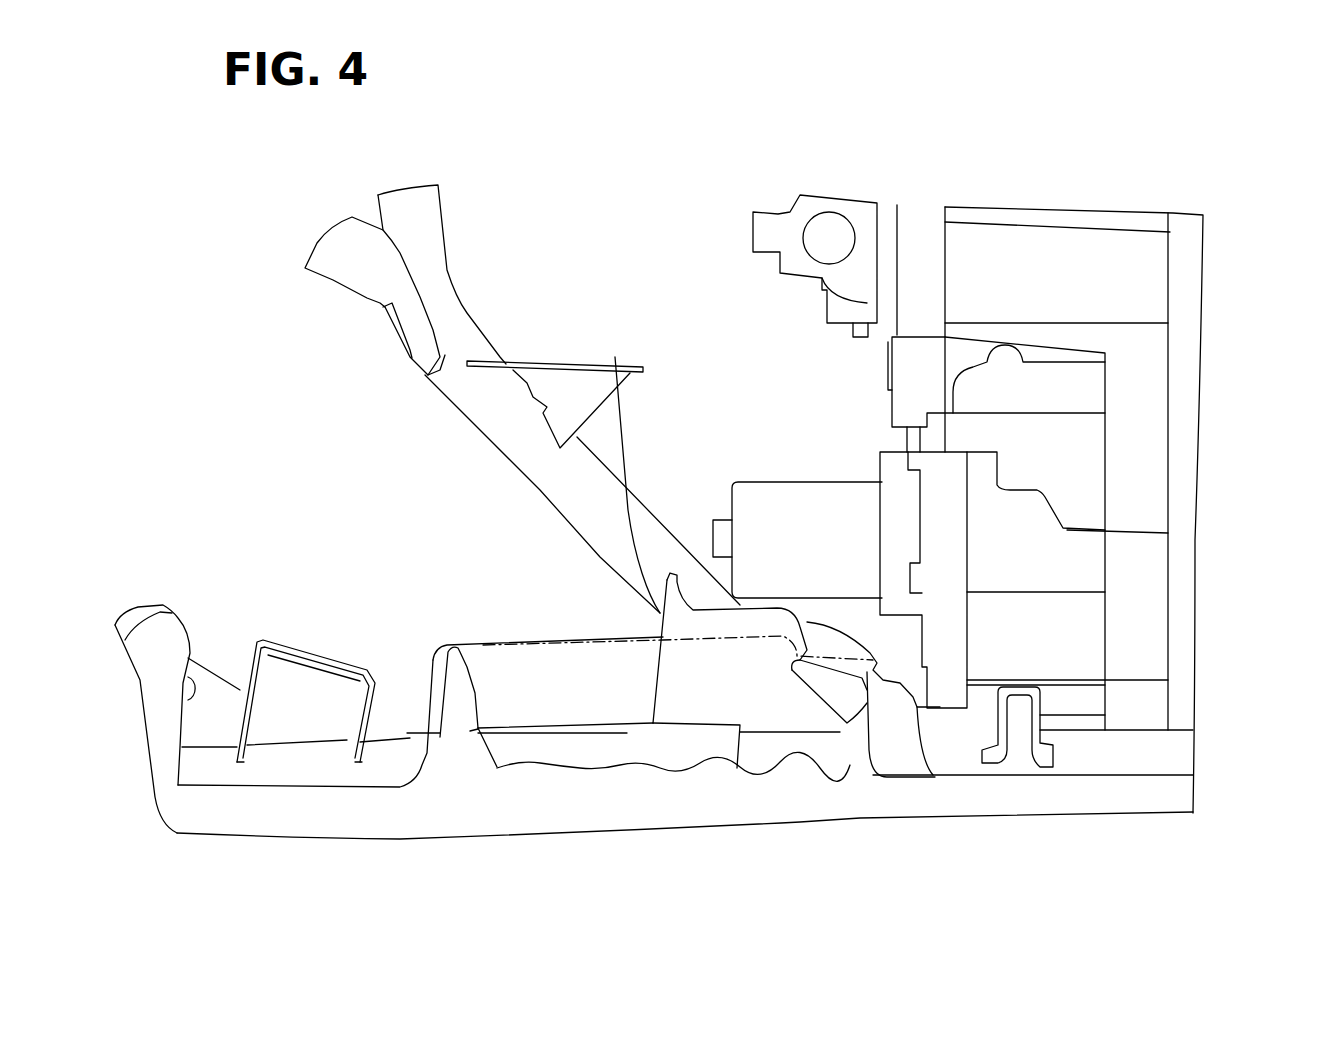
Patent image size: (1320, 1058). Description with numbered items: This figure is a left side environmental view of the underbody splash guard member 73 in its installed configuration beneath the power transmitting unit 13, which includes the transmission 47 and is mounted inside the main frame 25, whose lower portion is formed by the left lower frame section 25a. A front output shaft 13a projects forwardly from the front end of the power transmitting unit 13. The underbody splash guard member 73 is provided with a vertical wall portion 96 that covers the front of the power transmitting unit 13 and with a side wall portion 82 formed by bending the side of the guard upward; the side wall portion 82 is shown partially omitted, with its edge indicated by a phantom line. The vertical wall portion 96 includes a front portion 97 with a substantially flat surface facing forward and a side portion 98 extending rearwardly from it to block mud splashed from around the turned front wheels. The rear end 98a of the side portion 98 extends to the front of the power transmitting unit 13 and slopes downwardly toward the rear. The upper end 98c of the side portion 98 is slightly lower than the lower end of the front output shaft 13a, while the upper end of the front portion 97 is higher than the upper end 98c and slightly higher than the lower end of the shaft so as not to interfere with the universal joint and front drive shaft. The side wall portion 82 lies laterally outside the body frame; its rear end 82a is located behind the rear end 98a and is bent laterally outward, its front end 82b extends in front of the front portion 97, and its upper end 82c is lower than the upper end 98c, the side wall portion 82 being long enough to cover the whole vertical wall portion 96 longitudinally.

The power transmitting unit 13 is at (1140, 380).
The front output shaft 13a is at (808, 498).
The main frame 25 is at (437, 268).
The left lower frame section 25a is at (1085, 757).
The transmission 47 is at (982, 660).
The underbody splash guard member 73 is at (697, 833).
The side wall portion 82 is at (458, 680).
The rear end of side wall portion 82a is at (855, 710).
The front end of side wall portion 82b is at (403, 748).
The upper end of side wall portion 82c is at (557, 612).
The vertical wall portion 96 is at (618, 375).
The front portion 97 is at (597, 637).
The side portion 98 is at (743, 660).
The rear end of side portion 98a is at (930, 765).
The upper end of side portion 98c is at (762, 607).